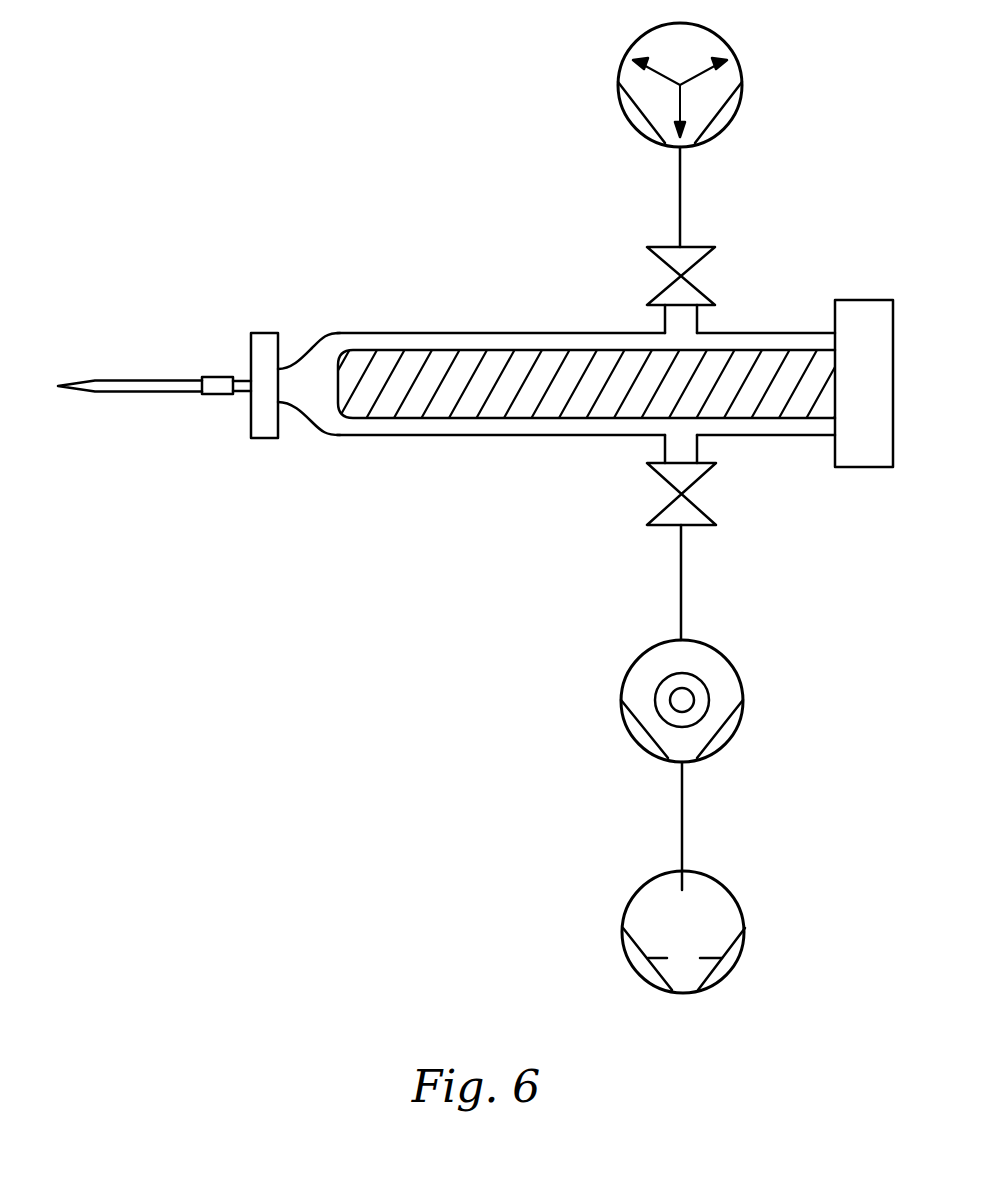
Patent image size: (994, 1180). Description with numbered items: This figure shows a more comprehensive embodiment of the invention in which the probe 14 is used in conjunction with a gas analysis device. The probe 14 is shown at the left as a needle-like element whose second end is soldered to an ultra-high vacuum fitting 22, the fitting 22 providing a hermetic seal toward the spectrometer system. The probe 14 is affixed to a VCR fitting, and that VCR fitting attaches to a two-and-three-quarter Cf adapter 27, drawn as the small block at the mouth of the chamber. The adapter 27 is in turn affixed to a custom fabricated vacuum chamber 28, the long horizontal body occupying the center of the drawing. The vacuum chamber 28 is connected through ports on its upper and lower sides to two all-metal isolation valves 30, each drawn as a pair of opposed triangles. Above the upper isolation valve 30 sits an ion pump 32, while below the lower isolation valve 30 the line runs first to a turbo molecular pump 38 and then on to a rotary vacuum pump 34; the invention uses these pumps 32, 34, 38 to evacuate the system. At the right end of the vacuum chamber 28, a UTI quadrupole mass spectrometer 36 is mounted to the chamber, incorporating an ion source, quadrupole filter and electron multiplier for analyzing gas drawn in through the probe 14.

The probe 14 is at (152, 338).
The ultra-high vacuum fitting 22 is at (218, 377).
The 2¾ Cf adapter 27 is at (260, 333).
The vacuum chamber 28 is at (500, 333).
The isolation valve 30 is at (700, 287).
The ion pump 32 is at (740, 100).
The rotary vacuum pump 34 is at (745, 955).
The quadrupole mass spectrometer 36 is at (921, 379).
The turbo molecular pump 38 is at (742, 727).